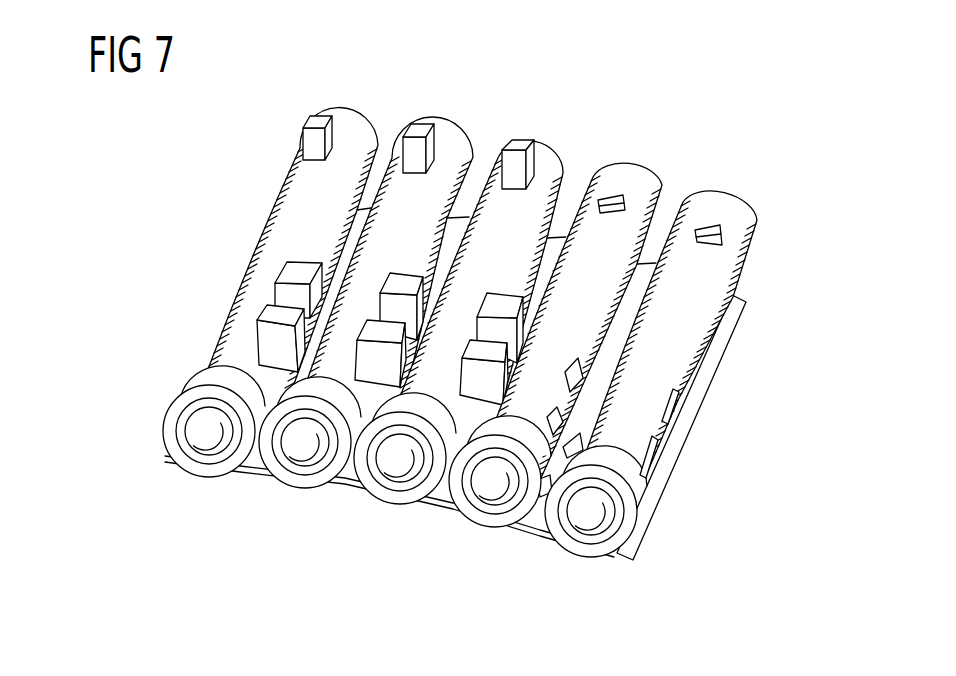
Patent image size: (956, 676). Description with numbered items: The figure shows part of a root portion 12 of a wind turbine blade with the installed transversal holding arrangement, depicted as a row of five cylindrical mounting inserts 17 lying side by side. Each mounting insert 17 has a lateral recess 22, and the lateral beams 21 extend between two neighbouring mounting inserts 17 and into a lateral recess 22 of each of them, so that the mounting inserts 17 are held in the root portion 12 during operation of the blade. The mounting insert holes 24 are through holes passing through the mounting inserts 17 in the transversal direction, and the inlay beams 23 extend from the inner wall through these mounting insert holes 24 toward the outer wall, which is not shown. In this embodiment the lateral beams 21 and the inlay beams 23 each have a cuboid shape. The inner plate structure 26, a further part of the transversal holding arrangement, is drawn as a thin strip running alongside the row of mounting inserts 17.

The root portion 12 is at (157, 229).
The mounting insert 17 is at (305, 486).
The lateral beam 21 is at (276, 312).
The lateral recess 22 is at (233, 364).
The inlay beam 23 is at (303, 143).
The mounting insert hole 24 is at (707, 229).
The inner plate structure 26 is at (722, 338).